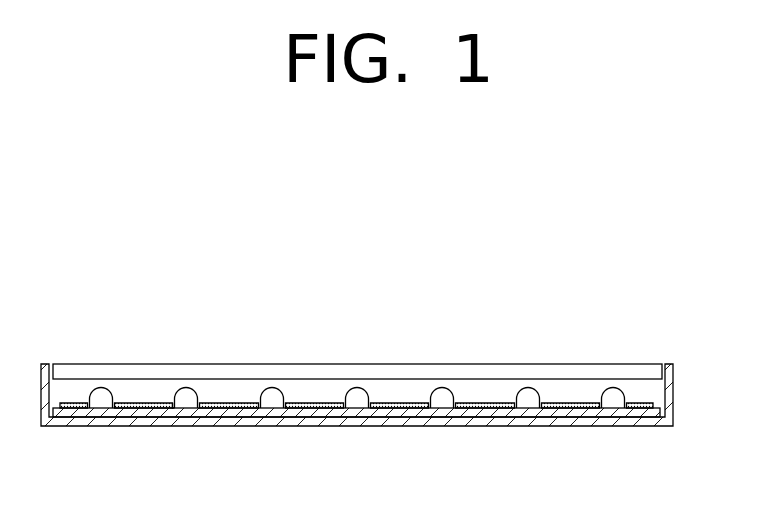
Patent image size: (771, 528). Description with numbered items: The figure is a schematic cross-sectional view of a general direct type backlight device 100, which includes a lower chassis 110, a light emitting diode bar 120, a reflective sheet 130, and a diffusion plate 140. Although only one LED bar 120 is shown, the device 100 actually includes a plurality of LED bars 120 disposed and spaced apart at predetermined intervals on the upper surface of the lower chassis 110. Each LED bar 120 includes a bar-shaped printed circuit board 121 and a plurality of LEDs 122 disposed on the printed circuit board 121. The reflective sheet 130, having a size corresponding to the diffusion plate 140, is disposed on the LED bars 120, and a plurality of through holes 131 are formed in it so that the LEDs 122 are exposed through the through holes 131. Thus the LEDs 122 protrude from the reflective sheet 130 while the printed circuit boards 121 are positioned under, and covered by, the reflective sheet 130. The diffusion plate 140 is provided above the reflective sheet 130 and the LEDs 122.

The direct type backlight device 100 is at (435, 308).
The lower chassis 110 is at (133, 422).
The light emitting diode (LED) bar 120 is at (68, 422).
The printed circuit board 121 is at (332, 413).
The LED 122 is at (272, 406).
The reflective sheet 130 is at (225, 408).
The through hole 131 is at (175, 404).
The diffusion plate 140 is at (79, 370).